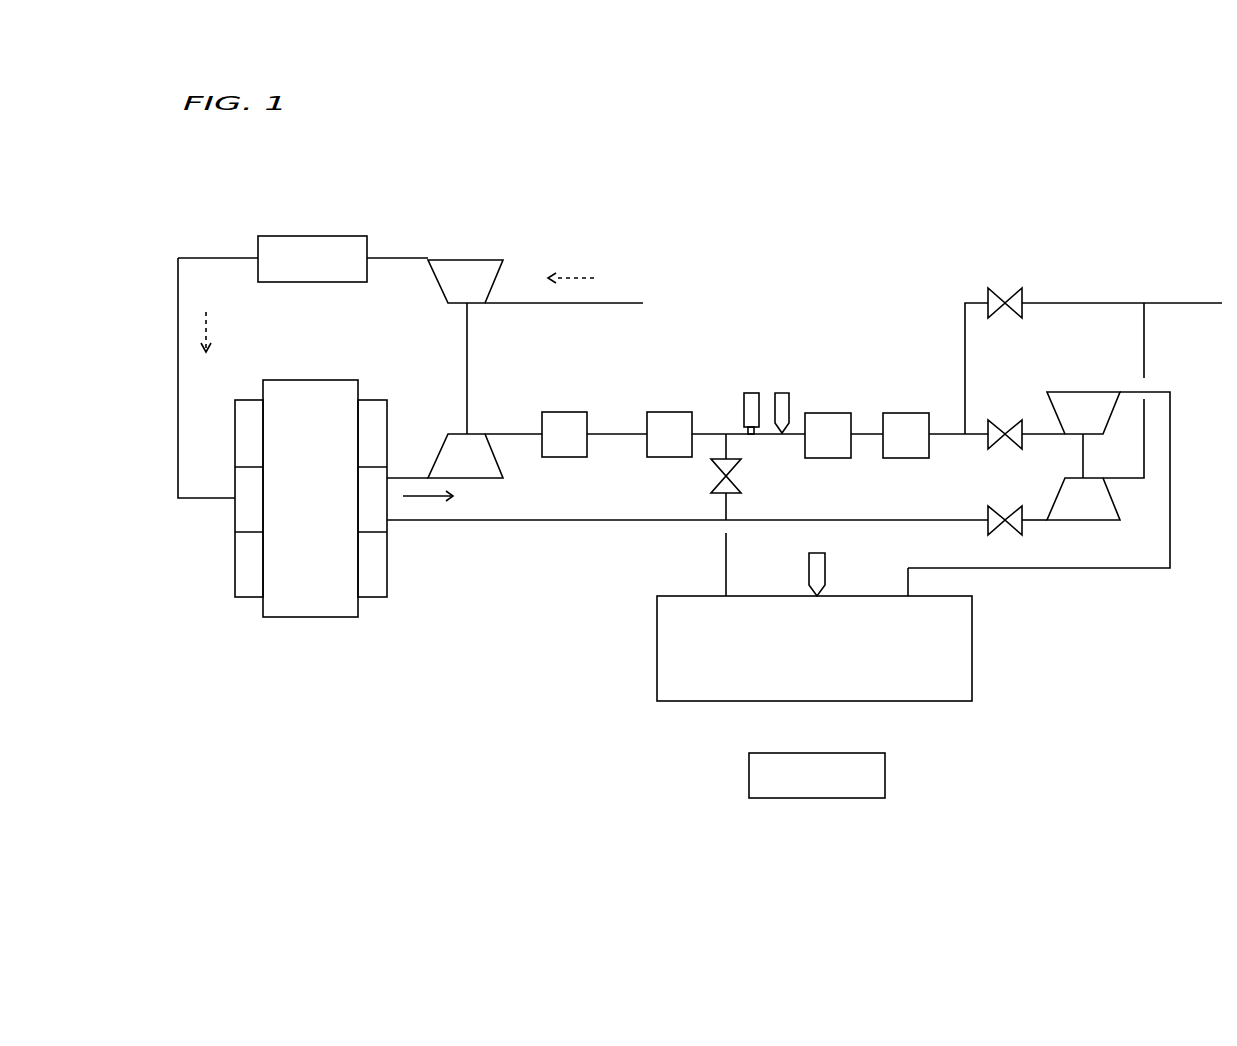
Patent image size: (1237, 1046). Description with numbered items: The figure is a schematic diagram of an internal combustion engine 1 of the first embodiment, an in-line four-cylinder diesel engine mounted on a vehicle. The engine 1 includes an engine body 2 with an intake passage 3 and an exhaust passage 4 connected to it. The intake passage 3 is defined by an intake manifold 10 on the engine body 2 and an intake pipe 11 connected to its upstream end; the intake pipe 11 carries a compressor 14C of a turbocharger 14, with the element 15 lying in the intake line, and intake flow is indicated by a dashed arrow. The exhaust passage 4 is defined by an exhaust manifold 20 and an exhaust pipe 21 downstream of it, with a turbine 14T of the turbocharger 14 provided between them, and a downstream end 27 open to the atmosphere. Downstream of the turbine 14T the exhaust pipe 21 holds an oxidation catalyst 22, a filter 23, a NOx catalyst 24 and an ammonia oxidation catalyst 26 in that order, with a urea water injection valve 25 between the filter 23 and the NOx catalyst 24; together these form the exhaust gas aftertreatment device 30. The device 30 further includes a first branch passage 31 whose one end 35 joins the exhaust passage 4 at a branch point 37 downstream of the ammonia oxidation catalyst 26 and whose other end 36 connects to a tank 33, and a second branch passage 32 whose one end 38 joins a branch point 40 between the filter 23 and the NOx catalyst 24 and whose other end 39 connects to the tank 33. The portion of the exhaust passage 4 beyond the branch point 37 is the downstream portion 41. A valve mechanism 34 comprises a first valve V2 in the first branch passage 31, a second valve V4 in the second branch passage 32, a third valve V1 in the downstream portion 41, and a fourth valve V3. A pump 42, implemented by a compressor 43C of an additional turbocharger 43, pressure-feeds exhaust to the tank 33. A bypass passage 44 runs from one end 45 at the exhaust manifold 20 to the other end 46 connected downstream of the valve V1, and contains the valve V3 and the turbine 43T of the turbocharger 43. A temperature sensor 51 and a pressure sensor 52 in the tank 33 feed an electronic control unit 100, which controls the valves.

The internal combustion engine 1 is at (222, 188).
The engine body 2 is at (312, 618).
The intake passage 3 is at (197, 256).
The exhaust passage 4 is at (632, 432).
The intake manifold 10 is at (243, 598).
The intake pipe 11 is at (229, 256).
The turbocharger 14 is at (466, 256).
The compressor 14C is at (496, 259).
The turbine 14T is at (494, 478).
The air cleaner 15 is at (308, 236).
The exhaust manifold 20 is at (372, 598).
The exhaust pipe 21 is at (600, 432).
The oxidation catalyst 22 is at (563, 412).
The filter 23 is at (677, 412).
The NOx catalyst 24 is at (830, 413).
The urea water injection valve 25 is at (748, 393).
The ammonia oxidation catalyst 26 is at (905, 413).
The downstream end 27 is at (1188, 302).
The exhaust gas aftertreatment device 30 is at (725, 350).
The first branch passage 31 is at (1172, 476).
The second branch passage 32 is at (728, 560).
The tank 33 is at (973, 647).
The valve mechanism 34 is at (1023, 267).
The one end 35 is at (980, 437).
The other end 36 is at (906, 577).
The branch point 37 is at (963, 433).
The one end 38 is at (722, 446).
The other end 39 is at (723, 577).
The branch point 40 is at (723, 432).
The downstream portion 41 is at (1085, 302).
The pump 42 is at (1070, 392).
The turbocharger 43 is at (1113, 529).
The compressor 43C is at (1083, 413).
The turbine 43T is at (1067, 522).
The bypass passage 44 is at (562, 522).
The one end 45 is at (413, 522).
The other end 46 is at (1148, 342).
The temperature sensor 51 is at (783, 393).
The pressure sensor 52 is at (818, 553).
The electronic control unit 100 is at (813, 800).
The third valve V1 is at (1005, 293).
The first valve V2 is at (1005, 424).
The fourth valve V3 is at (1017, 510).
The second valve V4 is at (738, 476).